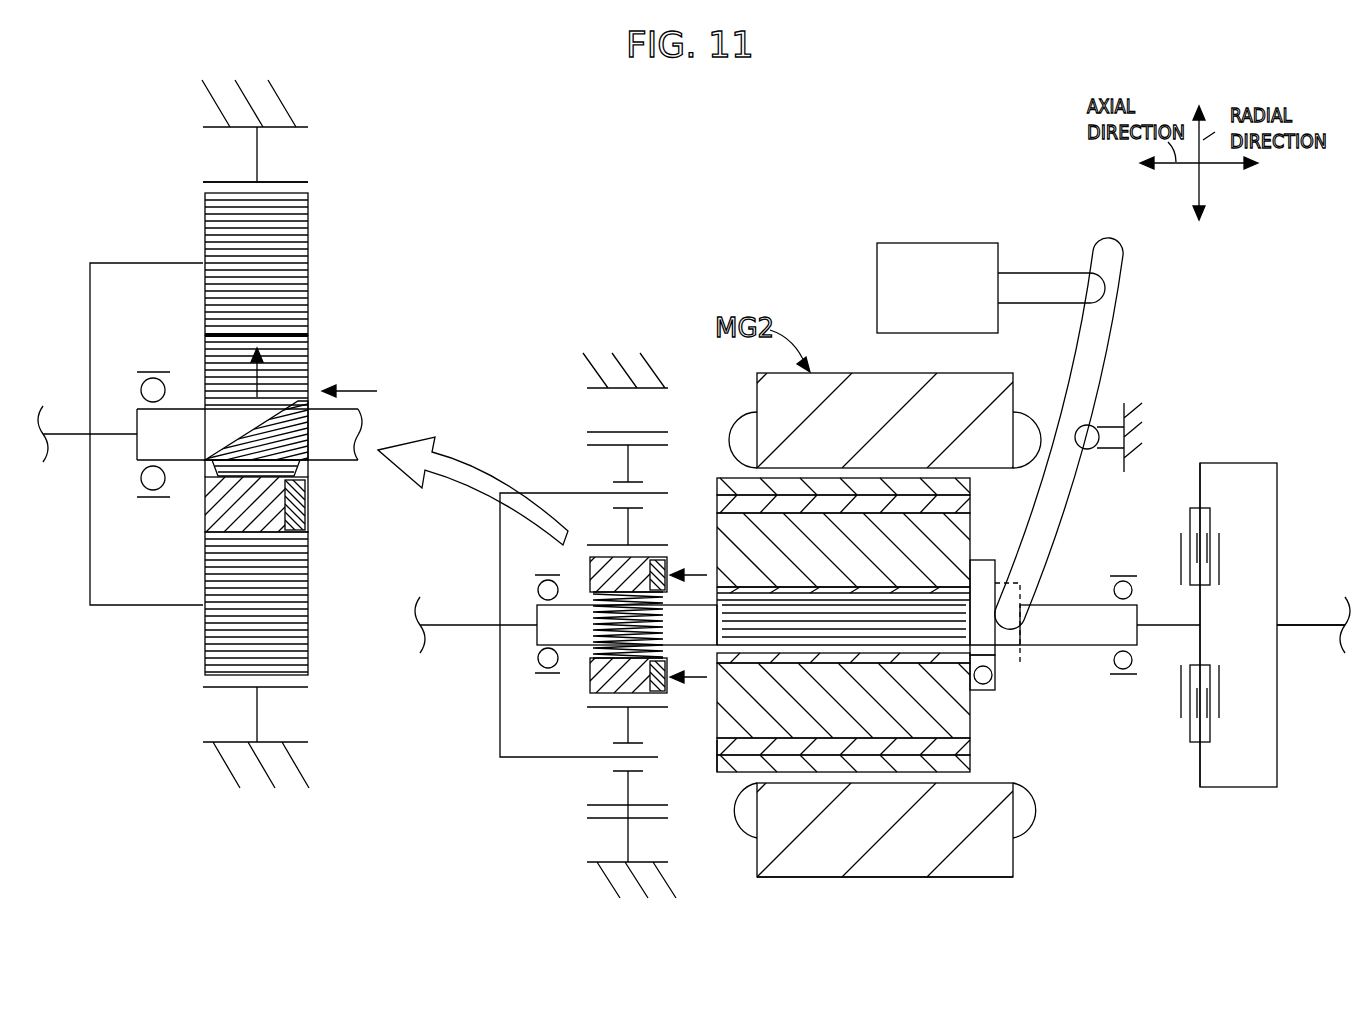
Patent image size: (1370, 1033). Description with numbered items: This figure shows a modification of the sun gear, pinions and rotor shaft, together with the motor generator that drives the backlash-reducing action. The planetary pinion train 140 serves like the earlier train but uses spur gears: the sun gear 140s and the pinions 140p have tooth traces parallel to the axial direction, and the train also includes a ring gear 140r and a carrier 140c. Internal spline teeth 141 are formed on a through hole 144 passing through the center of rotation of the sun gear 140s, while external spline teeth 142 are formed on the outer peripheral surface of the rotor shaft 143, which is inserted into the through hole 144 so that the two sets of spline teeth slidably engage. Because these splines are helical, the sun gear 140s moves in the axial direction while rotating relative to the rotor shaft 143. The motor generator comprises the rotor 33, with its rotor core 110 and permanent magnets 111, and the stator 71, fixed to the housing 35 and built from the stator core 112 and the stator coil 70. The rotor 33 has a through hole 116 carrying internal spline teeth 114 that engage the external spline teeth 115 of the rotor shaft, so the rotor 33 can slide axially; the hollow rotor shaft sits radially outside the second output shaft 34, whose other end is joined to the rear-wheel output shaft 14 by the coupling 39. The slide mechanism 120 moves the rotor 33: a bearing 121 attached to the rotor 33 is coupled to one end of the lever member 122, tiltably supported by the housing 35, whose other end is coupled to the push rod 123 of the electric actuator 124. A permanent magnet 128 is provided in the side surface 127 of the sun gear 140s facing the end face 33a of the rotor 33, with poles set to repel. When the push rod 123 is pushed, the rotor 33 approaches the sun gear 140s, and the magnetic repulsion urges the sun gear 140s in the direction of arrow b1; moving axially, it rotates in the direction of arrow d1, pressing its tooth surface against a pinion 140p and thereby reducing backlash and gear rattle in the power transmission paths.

The planetary pinion train 140 is at (170, 132).
The ring gear 140r is at (294, 185).
The pinions 140p is at (297, 250).
The sun gear 140s is at (213, 357).
The carrier 140c is at (138, 607).
The housing 35 is at (297, 100).
The second output shaft 34 is at (57, 436).
The external spline teeth 142 is at (313, 440).
The rotor shaft 143 is at (332, 463).
The through hole 144 is at (583, 630).
The internal spline teeth 141 is at (203, 463).
The permanent magnet 128 is at (307, 517).
The side surface 127 is at (665, 695).
The arrow d1 is at (237, 374).
The arrow b1 is at (351, 391).
The end face 33a is at (712, 748).
The rotor 33 is at (870, 629).
The rotor core 110 is at (972, 720).
The permanent magnets 111 is at (967, 748).
The internal spline teeth 114 is at (857, 595).
The external spline teeth 115 is at (785, 595).
The through hole 116 is at (933, 595).
The stator 71 is at (919, 625).
The stator coil 70 is at (1040, 812).
The stator core 112 is at (1002, 865).
The bearing 121 is at (1000, 670).
The slide mechanism 120 is at (1058, 407).
The lever member 122 is at (1092, 372).
The push rod 123 is at (1027, 278).
The electric actuator 124 is at (932, 242).
The coupling 39 is at (1257, 462).
The rear-wheel output shaft 14 is at (1312, 625).